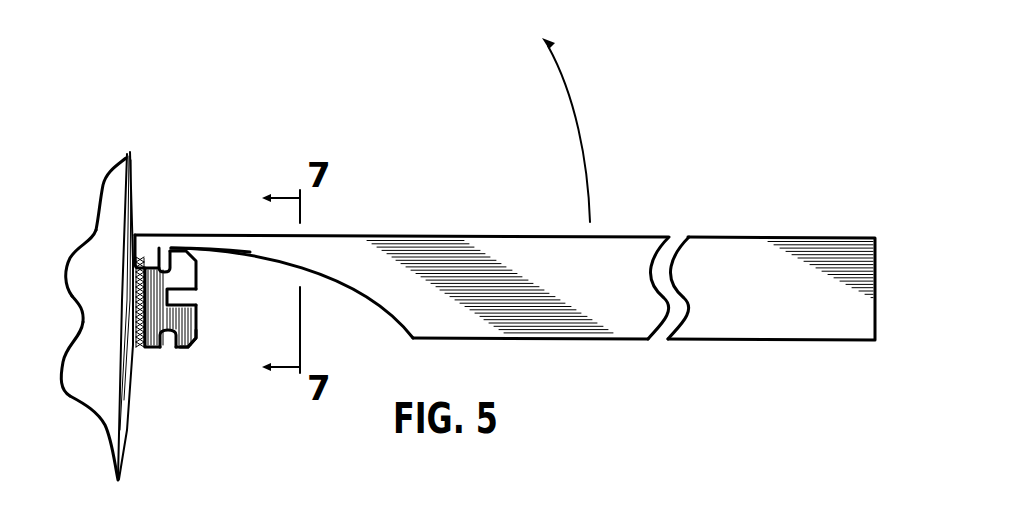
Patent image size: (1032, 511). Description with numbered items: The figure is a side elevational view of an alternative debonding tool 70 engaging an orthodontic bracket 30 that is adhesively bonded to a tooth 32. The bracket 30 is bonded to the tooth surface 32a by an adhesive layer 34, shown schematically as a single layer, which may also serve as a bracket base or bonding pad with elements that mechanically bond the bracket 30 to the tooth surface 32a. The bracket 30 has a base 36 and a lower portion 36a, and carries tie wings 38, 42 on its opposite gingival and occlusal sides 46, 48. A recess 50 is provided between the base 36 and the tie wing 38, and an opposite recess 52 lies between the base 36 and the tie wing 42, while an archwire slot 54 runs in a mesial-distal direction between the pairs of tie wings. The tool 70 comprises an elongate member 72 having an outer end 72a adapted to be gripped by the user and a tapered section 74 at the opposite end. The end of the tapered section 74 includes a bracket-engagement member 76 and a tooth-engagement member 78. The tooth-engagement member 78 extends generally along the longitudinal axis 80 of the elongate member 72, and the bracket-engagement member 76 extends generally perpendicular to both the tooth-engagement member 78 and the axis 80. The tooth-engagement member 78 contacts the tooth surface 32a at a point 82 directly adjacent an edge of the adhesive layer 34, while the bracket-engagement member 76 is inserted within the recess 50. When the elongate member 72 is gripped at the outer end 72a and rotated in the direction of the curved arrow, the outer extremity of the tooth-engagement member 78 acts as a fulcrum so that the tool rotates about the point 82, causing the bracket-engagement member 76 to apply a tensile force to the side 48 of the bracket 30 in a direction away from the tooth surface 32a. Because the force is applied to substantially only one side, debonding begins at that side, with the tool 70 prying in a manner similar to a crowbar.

The bracket 30 is at (188, 278).
The tooth 32 is at (129, 152).
The tooth surface 32a is at (132, 187).
The adhesive layer 34 is at (134, 276).
The base 36 is at (157, 305).
The lower base portion 36a is at (147, 333).
The tie wing 38 is at (203, 253).
The tie wing 42 is at (190, 344).
The gingival side 46 is at (148, 358).
The occlusal side 48 is at (138, 212).
The recess 50 is at (166, 262).
The recess 52 is at (166, 336).
The archwire slot 54 is at (180, 303).
The tool 70 is at (427, 149).
The elongate member 72 is at (462, 234).
The outer end 72a is at (740, 238).
The tapered section 74 is at (322, 278).
The bracket-engagement member 76 is at (142, 268).
The tooth-engagement member 78 is at (150, 235).
The longitudinal axis 80 is at (133, 232).
The point 82 is at (133, 244).